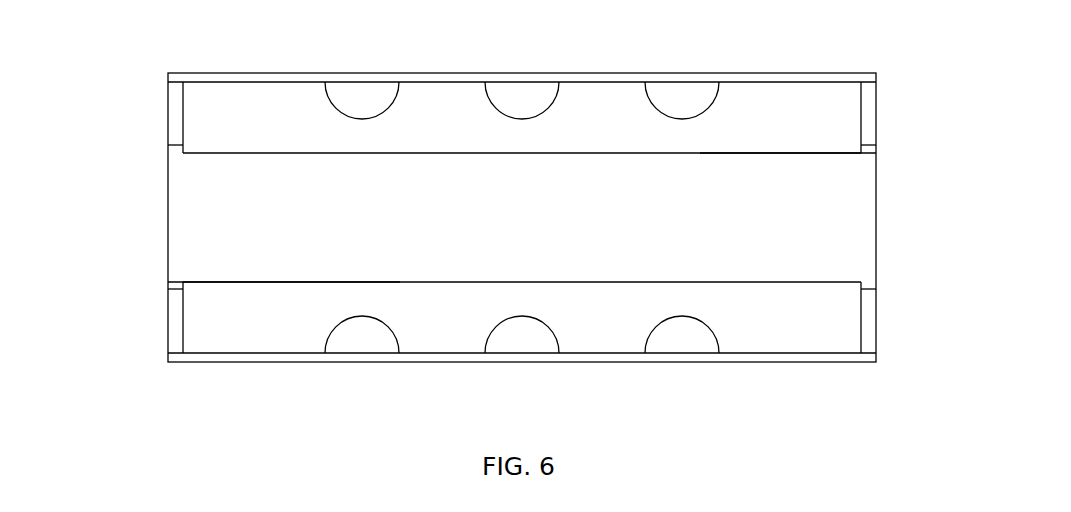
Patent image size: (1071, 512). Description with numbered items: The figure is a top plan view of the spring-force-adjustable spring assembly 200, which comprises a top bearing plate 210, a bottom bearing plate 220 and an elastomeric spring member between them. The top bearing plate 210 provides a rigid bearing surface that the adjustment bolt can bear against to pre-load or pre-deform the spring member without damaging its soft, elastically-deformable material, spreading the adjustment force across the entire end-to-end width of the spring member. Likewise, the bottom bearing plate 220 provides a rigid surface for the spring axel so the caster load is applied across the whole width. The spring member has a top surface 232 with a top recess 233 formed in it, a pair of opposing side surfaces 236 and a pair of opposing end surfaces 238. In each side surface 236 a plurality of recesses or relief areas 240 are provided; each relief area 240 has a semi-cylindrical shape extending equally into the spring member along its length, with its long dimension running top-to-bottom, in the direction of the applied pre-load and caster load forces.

The spring-force-adjustable spring assembly 200 is at (140, 34).
The top bearing plate 210 is at (193, 203).
The bottom bearing plate 220 is at (176, 321).
The top surface 232 is at (293, 103).
The top recess 233 is at (838, 152).
The side surfaces 236 is at (792, 81).
The end surfaces 238 is at (183, 113).
The relief areas 240 is at (372, 92).